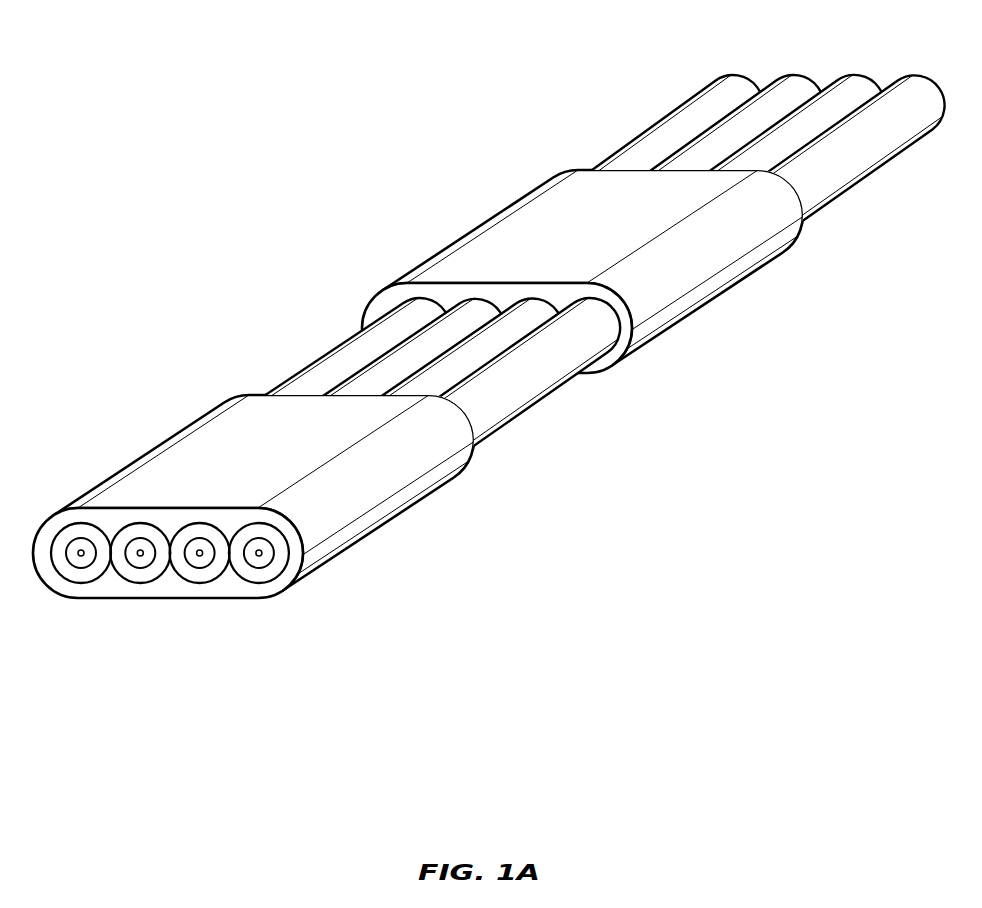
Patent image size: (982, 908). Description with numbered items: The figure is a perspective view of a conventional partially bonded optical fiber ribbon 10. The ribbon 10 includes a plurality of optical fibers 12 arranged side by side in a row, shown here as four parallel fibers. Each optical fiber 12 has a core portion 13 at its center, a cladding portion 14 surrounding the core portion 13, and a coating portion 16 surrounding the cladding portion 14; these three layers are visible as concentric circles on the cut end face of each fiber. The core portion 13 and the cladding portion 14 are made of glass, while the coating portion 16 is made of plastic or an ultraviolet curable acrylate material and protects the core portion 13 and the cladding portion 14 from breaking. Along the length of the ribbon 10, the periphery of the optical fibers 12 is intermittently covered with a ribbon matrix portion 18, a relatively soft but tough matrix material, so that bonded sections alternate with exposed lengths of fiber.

The partially bonded optical fiber ribbon 10 is at (385, 172).
The optical fiber 12 is at (292, 377).
The core portion 13 is at (75, 565).
The cladding portion 14 is at (70, 551).
The coating portion 16 is at (84, 583).
The ribbon matrix portion 18 is at (382, 525).